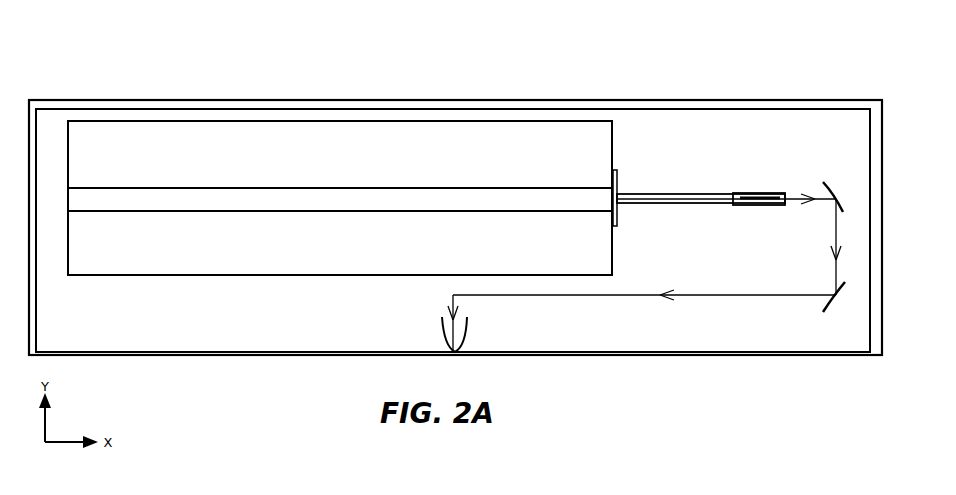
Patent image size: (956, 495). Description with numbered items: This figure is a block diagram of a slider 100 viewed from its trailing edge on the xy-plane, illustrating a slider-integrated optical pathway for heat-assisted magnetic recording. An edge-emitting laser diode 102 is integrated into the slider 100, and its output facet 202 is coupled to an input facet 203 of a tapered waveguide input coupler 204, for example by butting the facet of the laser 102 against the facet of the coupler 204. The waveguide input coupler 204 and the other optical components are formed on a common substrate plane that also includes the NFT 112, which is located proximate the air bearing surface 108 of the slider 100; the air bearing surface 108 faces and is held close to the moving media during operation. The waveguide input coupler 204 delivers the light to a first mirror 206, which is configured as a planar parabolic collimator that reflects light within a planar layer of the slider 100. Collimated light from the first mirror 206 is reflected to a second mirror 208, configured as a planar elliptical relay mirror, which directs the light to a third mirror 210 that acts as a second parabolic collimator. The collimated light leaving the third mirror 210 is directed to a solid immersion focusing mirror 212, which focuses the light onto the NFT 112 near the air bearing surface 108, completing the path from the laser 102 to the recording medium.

The HAMR slider 100 is at (643, 45).
The edge-emitting laser diode 102 is at (348, 125).
The air bearing surface 108 is at (727, 356).
The NFT 112 is at (455, 356).
The output facet 202 is at (613, 193).
The input facet 203 is at (617, 195).
The tapered waveguide input coupler 204 is at (715, 201).
The first mirror 206 is at (835, 190).
The second mirror 208 is at (836, 297).
The third mirror 210 is at (452, 297).
The solid immersion focusing mirror 212 is at (424, 330).